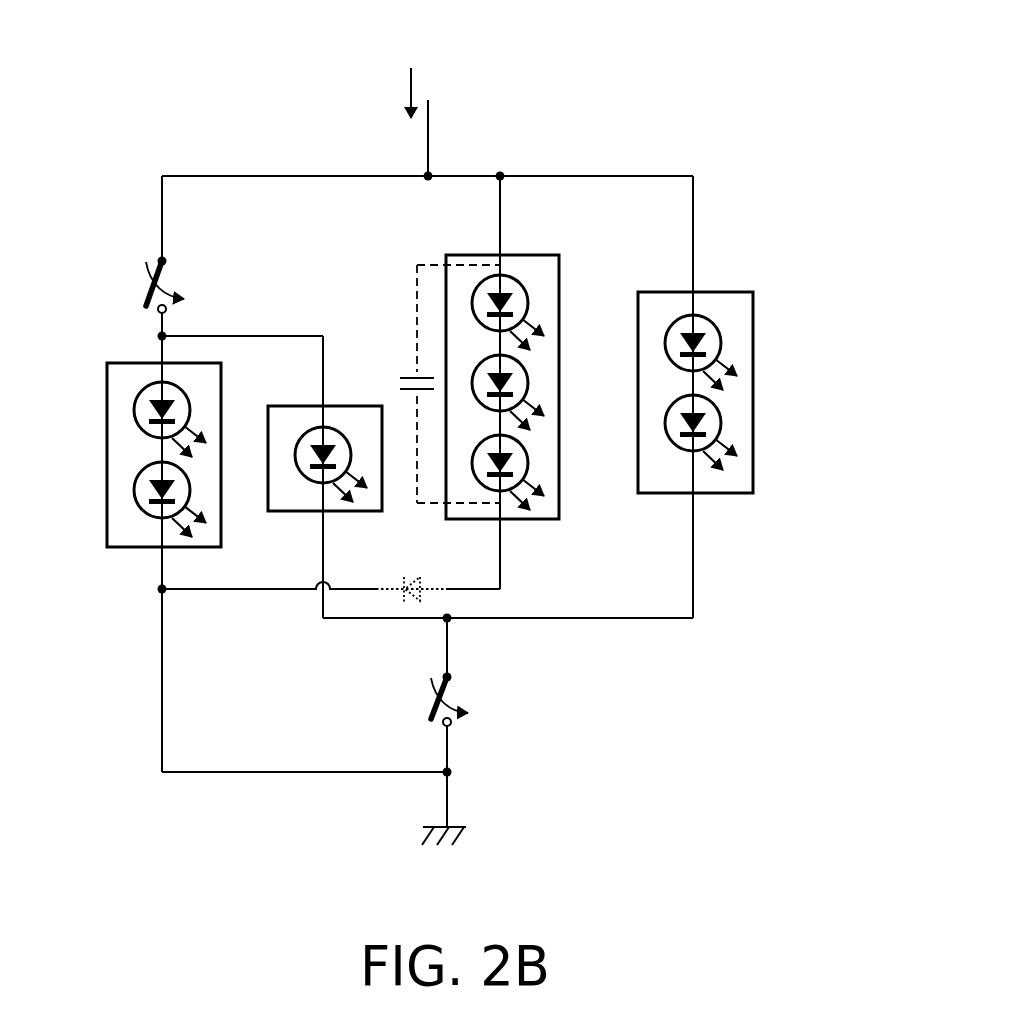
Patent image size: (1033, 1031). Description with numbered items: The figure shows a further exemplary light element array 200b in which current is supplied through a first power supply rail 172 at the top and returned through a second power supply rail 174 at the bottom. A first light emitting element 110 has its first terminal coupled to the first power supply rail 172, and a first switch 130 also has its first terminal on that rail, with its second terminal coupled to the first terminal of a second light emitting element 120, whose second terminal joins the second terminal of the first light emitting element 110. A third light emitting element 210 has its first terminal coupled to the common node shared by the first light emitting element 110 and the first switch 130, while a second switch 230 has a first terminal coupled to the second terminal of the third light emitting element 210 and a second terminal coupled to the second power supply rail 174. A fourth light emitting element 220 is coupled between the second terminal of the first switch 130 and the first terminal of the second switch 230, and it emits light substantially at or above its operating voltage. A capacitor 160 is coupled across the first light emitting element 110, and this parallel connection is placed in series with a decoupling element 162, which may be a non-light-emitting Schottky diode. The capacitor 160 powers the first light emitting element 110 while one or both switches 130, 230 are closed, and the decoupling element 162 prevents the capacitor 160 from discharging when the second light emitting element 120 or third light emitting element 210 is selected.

The light element array 200b is at (681, 69).
The first power supply rail 172 is at (464, 140).
The second power supply rail 174 is at (464, 816).
The first switch 130 is at (137, 288).
The second switch 230 is at (418, 712).
The first light emitting element 110 is at (531, 386).
The second light emitting element 120 is at (128, 482).
The third light emitting element 210 is at (731, 394).
The fourth light emitting element 220 is at (312, 477).
The capacitor 160 is at (405, 376).
The decoupling element 162 is at (412, 582).